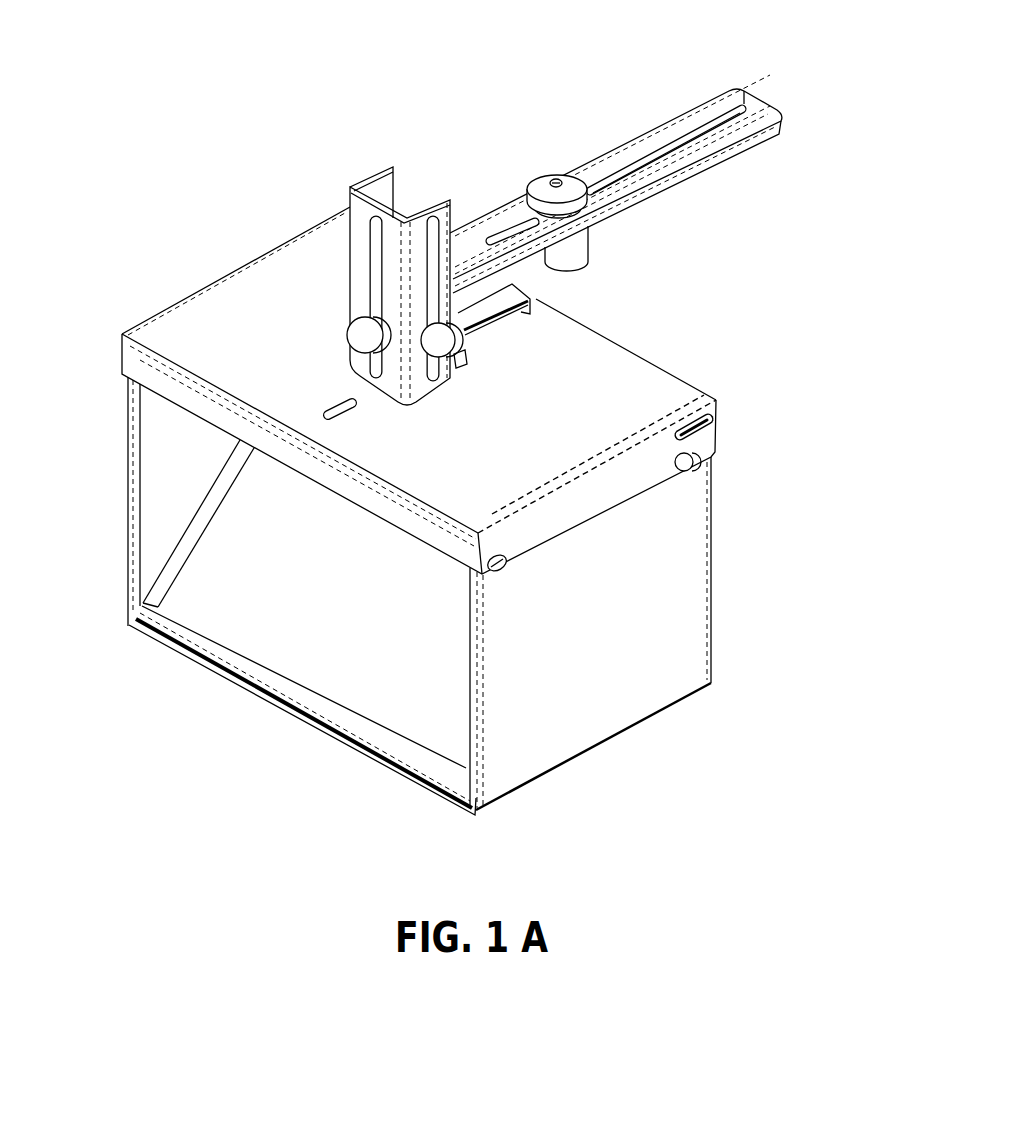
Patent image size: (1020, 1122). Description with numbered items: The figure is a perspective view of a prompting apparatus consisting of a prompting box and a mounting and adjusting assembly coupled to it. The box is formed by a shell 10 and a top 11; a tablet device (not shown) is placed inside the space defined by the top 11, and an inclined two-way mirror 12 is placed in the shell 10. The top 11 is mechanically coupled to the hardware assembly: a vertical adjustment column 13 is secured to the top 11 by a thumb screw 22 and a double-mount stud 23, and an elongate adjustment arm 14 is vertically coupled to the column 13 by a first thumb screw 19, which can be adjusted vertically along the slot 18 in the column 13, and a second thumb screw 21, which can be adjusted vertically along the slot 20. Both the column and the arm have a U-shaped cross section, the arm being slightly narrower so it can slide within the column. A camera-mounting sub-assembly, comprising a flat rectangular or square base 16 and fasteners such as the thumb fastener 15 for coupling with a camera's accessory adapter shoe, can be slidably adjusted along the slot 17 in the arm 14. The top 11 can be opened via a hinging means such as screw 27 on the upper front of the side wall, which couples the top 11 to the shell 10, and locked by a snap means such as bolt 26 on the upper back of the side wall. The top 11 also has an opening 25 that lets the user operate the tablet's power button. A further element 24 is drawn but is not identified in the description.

The shell 10 is at (587, 737).
The top 11 is at (673, 398).
The inclined two-way mirror 12 is at (313, 667).
The vertical adjustment column 13 is at (381, 168).
The elongate adjustment arm 14 is at (757, 107).
The thumb fastener 15 is at (571, 176).
The base 16 is at (560, 271).
The slot 17 is at (737, 87).
The slot 18 is at (366, 216).
The first thumb screw 19 is at (348, 331).
The slot 20 is at (446, 214).
The second thumb screw 21 is at (442, 345).
The thumb screw 22 is at (462, 352).
The double-mount stud 23 is at (468, 361).
The pin 24 is at (333, 409).
The opening 25 is at (715, 421).
The bolt 26 is at (695, 467).
The screw 27 is at (500, 574).